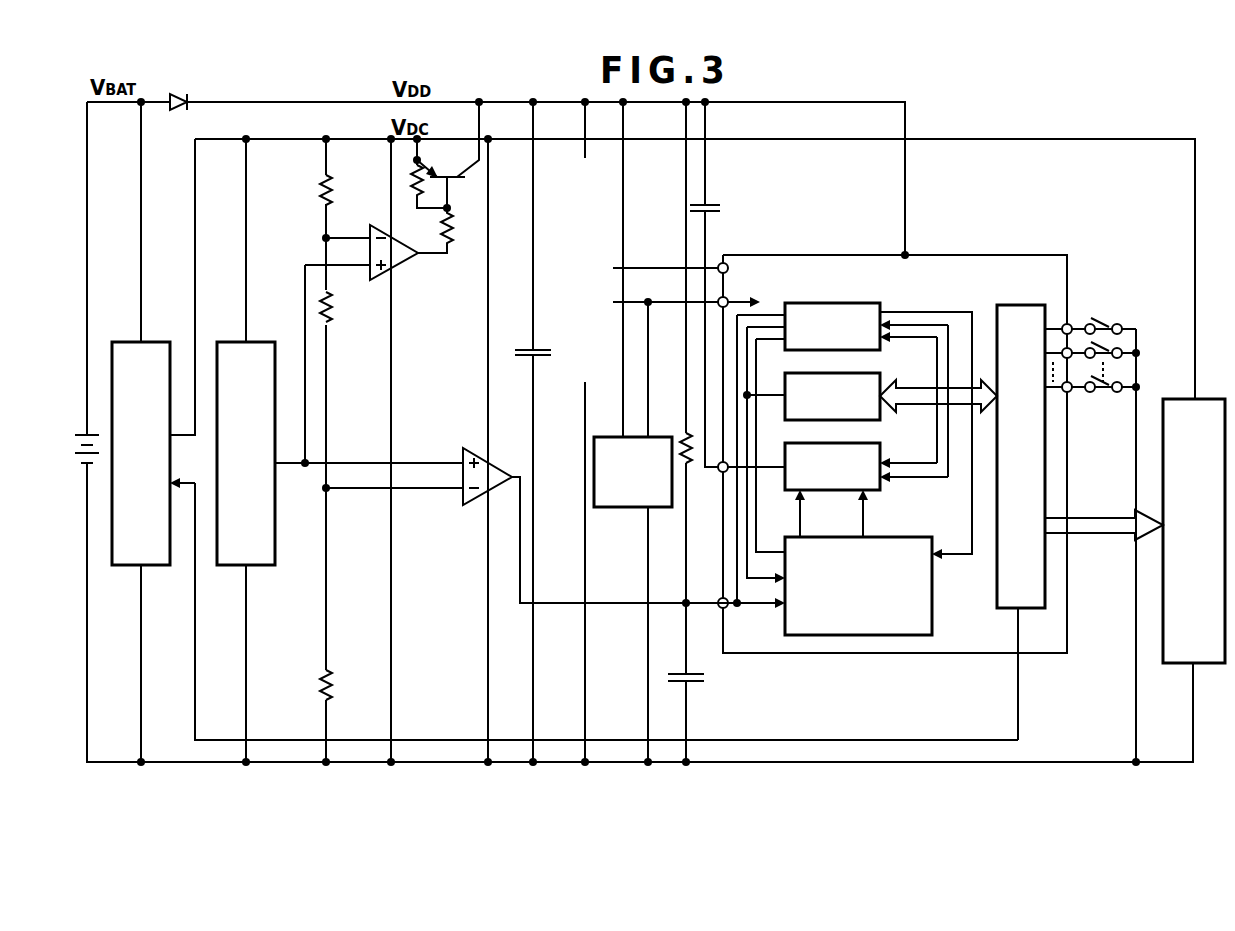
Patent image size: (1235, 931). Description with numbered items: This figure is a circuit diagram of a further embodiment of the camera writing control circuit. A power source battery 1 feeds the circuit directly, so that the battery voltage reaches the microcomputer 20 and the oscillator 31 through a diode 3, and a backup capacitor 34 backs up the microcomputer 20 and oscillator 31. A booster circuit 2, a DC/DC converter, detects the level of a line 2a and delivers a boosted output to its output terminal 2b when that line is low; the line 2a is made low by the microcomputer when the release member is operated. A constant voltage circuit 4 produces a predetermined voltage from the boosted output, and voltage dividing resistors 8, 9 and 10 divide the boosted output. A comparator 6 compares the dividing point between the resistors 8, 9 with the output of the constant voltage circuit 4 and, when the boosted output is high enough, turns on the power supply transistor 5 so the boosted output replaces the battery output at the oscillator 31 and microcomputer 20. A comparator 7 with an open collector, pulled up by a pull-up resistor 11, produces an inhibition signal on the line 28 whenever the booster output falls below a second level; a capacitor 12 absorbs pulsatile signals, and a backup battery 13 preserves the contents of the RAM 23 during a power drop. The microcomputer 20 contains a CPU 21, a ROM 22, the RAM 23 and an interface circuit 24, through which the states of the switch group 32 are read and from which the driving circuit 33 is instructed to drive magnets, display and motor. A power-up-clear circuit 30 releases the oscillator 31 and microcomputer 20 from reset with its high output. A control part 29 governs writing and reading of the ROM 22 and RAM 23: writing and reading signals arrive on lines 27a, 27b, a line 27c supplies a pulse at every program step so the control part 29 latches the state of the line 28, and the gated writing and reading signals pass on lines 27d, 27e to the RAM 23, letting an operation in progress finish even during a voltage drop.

The power source battery 1 is at (96, 433).
The booster circuit 2 is at (156, 340).
The line 2a is at (593, 609).
The output terminal 2b is at (182, 287).
The diode 3 is at (178, 92).
The constant voltage circuit 4 is at (265, 340).
The power supply transistor 5 is at (466, 181).
The comparator 6 is at (404, 270).
The comparator 7 is at (494, 462).
The voltage dividing resistor 8 is at (333, 190).
The voltage dividing resistor 9 is at (334, 312).
The voltage dividing resistor 10 is at (334, 684).
The pull-up resistor 11 is at (691, 461).
The capacitor 12 is at (706, 678).
The backup battery 13 is at (722, 209).
The microcomputer 20 is at (1034, 256).
The CPU 21 is at (872, 303).
The ROM 22 is at (878, 373).
The RAM 23 is at (878, 443).
The interface circuit 24 is at (1025, 305).
The line 27a is at (757, 538).
The line 27b is at (746, 572).
The line 27c is at (970, 546).
The line 27d is at (806, 514).
The line 27e is at (869, 514).
The line 28 is at (760, 607).
The control part 29 is at (935, 588).
The power-up-clear circuit 30 is at (655, 437).
The oscillator 31 is at (580, 384).
The switch group 32 is at (1103, 318).
The driving circuit 33 is at (1179, 398).
The backup capacitor 34 is at (517, 352).